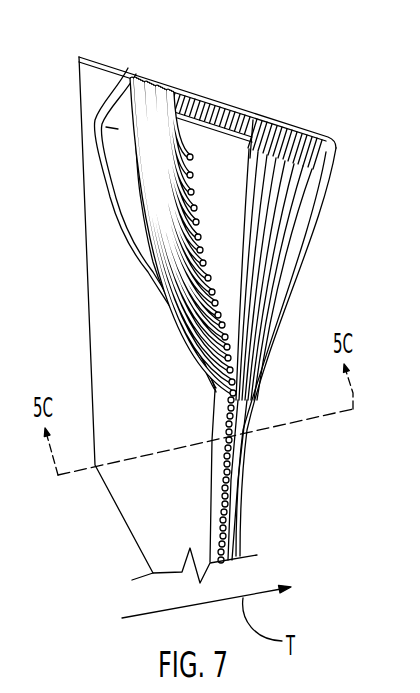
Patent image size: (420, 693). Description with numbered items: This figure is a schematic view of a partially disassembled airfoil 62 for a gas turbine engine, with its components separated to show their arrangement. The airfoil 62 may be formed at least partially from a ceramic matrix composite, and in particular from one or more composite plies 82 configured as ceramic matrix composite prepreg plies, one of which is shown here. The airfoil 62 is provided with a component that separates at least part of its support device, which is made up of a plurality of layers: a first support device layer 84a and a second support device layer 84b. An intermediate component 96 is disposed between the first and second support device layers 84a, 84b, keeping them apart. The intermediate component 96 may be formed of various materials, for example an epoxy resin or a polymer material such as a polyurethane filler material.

The airfoil 62 is at (273, 456).
The composite plies 82 is at (107, 283).
The first support device layer 84a is at (157, 86).
The second support device layer 84b is at (258, 122).
The intermediate component 96 is at (217, 150).